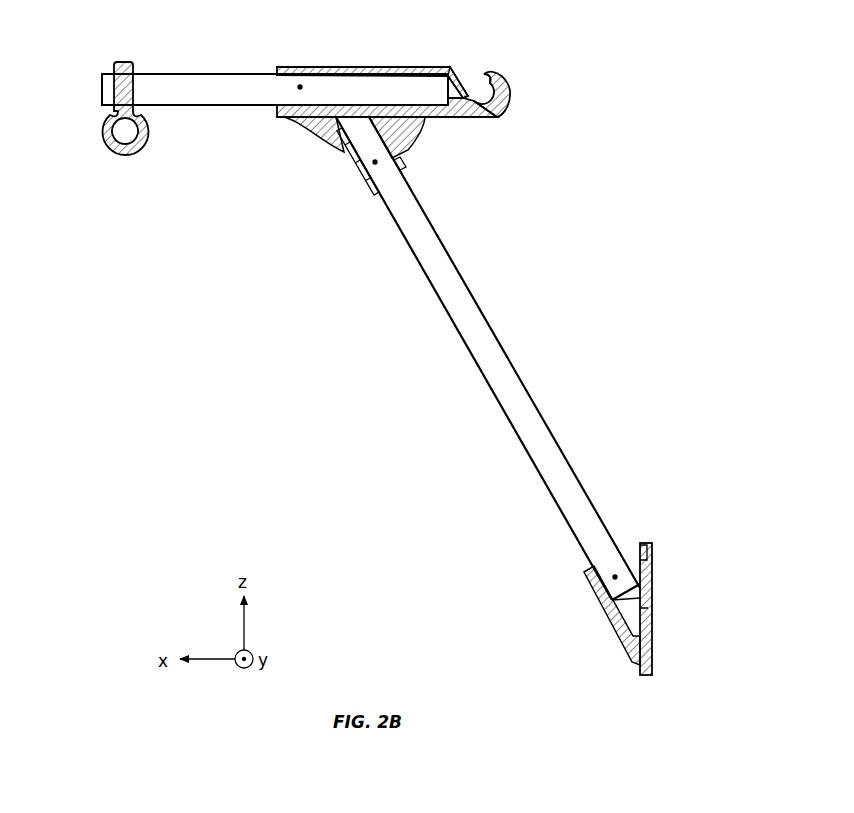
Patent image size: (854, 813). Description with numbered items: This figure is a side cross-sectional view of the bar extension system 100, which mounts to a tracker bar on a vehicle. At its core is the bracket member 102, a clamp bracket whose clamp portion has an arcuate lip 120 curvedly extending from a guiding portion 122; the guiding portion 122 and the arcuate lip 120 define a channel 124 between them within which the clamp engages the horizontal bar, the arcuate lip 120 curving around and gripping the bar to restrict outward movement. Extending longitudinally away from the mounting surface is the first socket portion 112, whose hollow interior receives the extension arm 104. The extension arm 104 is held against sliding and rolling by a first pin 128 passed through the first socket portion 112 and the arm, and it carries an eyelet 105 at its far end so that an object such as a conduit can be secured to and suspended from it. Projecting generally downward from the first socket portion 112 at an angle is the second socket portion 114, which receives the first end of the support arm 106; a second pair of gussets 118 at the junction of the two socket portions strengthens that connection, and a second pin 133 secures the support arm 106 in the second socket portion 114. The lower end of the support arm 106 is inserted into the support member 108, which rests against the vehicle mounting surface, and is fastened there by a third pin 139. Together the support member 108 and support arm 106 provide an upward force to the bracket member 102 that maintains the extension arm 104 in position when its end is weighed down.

The bar extension system 100 is at (694, 206).
The bracket member 102 is at (432, 118).
The extension arm 104 is at (195, 73).
The eyelet 105 is at (103, 130).
The support arm 106 is at (493, 398).
The support member 108 is at (636, 645).
The first socket portion 112 is at (368, 66).
The second socket portion 114 is at (360, 184).
The second pair of gussets 118 is at (318, 131).
The arcuate lip 120 is at (510, 99).
The guiding portion 122 is at (461, 80).
The channel 124 is at (488, 95).
The first pin 128 is at (299, 86).
The second pin 133 is at (376, 164).
The third pin 139 is at (616, 575).